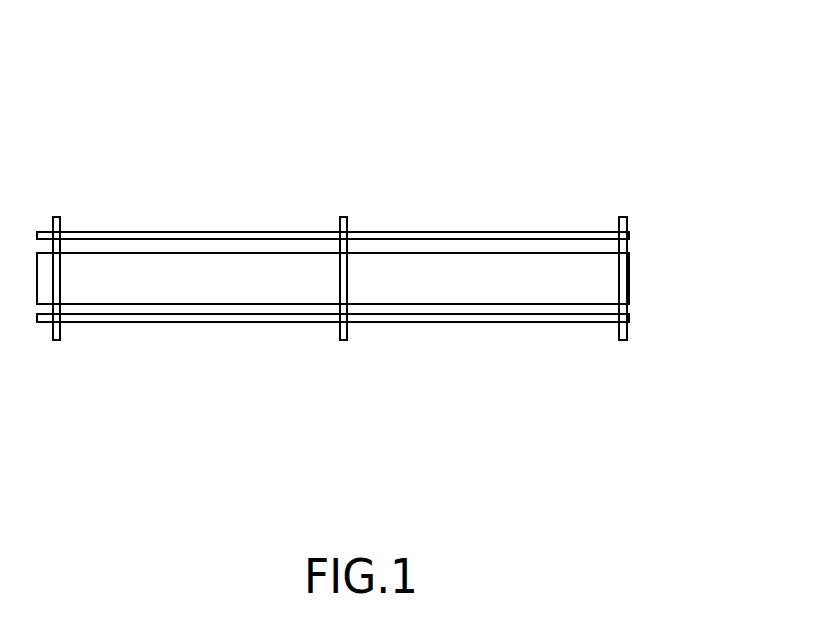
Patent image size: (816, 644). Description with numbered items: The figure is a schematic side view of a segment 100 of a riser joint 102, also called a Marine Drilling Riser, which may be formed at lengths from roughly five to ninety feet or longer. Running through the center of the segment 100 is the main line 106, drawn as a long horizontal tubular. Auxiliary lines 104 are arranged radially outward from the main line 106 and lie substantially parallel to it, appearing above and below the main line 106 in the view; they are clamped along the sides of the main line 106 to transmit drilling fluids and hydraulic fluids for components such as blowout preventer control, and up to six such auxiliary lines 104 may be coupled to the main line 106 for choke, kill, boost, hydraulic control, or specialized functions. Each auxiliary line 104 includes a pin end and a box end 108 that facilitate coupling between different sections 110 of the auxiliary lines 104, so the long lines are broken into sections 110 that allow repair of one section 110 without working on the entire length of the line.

The segment 100 is at (605, 109).
The riser joint 102 is at (373, 195).
The auxiliary lines 104 is at (195, 230).
The main line 106 is at (629, 277).
The box end 108 is at (333, 328).
The sections 110 is at (292, 230).